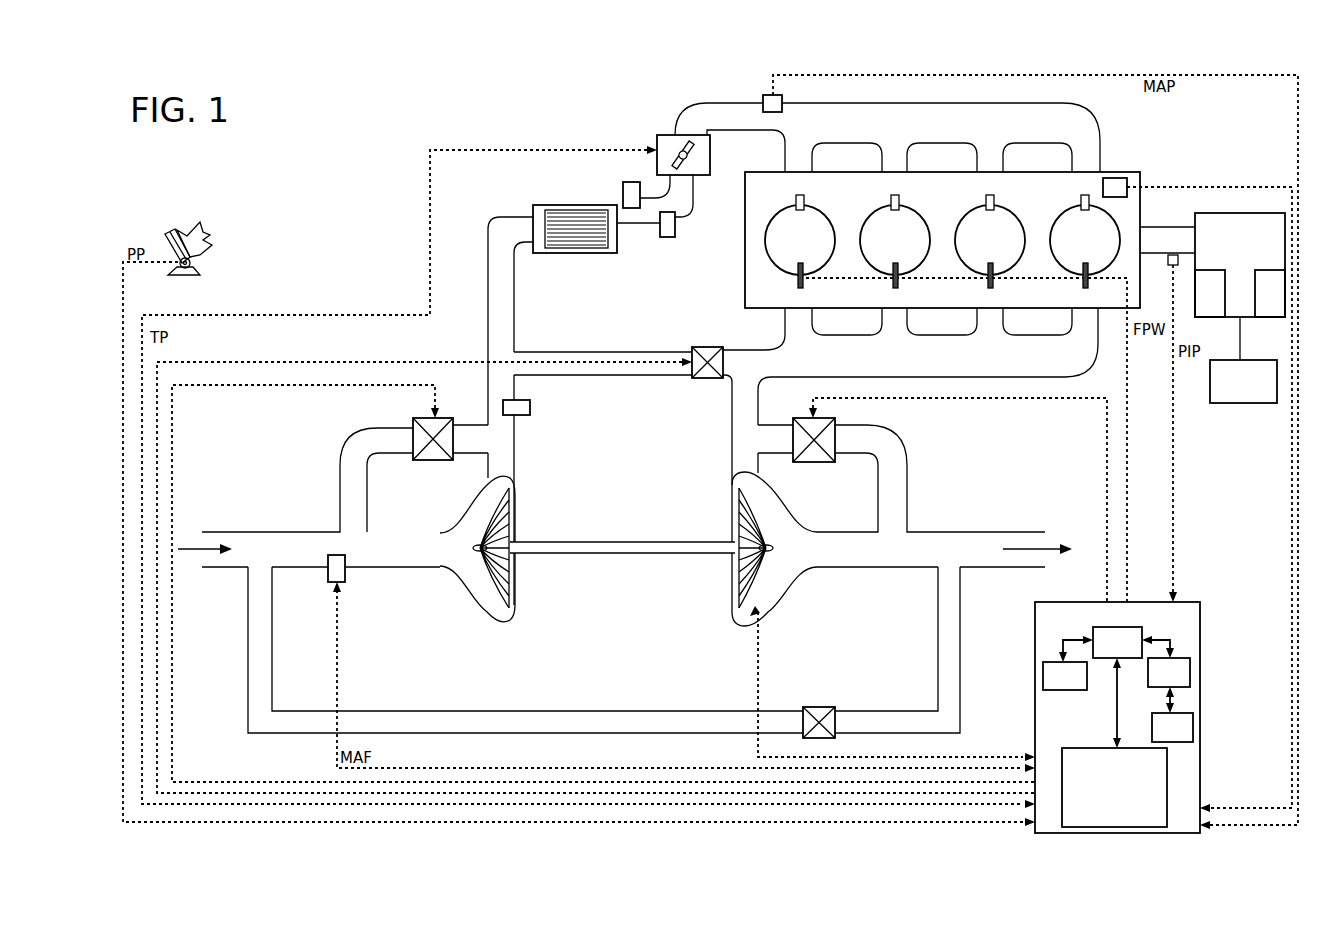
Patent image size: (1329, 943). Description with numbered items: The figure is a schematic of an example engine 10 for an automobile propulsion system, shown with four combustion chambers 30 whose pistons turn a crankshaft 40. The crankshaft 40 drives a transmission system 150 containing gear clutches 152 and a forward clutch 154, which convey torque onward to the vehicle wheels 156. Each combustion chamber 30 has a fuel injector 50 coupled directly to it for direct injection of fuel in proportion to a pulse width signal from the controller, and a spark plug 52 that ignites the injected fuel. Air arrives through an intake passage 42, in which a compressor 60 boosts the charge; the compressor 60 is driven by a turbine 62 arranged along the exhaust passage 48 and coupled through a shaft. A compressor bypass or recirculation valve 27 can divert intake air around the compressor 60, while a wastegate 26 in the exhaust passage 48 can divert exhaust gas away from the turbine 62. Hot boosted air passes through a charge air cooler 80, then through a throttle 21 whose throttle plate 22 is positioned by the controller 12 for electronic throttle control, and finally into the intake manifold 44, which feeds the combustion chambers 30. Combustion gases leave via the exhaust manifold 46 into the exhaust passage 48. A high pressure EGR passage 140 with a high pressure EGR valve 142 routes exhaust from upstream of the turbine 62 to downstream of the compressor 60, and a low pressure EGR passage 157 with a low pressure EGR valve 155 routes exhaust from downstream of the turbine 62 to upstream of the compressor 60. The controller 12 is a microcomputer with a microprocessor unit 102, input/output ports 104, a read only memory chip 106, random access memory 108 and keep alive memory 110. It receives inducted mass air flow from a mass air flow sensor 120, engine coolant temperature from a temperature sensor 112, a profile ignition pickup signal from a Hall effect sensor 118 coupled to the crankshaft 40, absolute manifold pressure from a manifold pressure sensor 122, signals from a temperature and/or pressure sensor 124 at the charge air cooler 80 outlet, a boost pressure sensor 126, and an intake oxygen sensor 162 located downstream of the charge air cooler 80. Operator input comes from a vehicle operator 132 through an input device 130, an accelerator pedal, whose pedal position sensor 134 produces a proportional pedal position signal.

The engine 10 is at (956, 223).
The controller 12 is at (1106, 717).
The throttle 21 is at (673, 138).
The throttle plate 22 is at (700, 166).
The wastegate 26 is at (835, 426).
The compressor bypass or recirculation valve 27 is at (413, 428).
The combustion chamber 30 is at (809, 248).
The crankshaft 40 is at (1162, 227).
The intake passage 42 is at (256, 556).
The intake manifold 44 is at (829, 130).
The exhaust manifold 46 is at (951, 366).
The exhaust passage 48 is at (753, 408).
The fuel injector 50 is at (797, 285).
The spark plug 52 is at (805, 200).
The compressor 60 is at (468, 600).
The turbine 62 is at (770, 503).
The charge air cooler 80 is at (585, 205).
The microprocessor unit 102 is at (1090, 634).
The input/output ports 104 is at (1154, 820).
The read only memory chip 106 is at (1043, 683).
The random access memory 108 is at (1190, 664).
The keep alive memory 110 is at (1193, 716).
The temperature sensor 112 is at (1118, 178).
The Hall effect sensor 118 is at (1170, 266).
The MAF sensor 120 is at (345, 572).
The MAP sensor 122 is at (782, 100).
The temperature and/or pressure sensor 124 is at (667, 237).
The boost pressure sensor 126 is at (530, 410).
The input device 130 is at (186, 239).
The vehicle operator 132 is at (207, 233).
The pedal position sensor 134 is at (190, 263).
The high pressure EGR passage 140 is at (605, 352).
The high pressure EGR valve 142 is at (718, 347).
The transmission system 150 is at (1240, 265).
The gear clutches 152 is at (1223, 308).
The forward clutch 154 is at (1283, 308).
The low pressure EGR valve 155 is at (820, 707).
The vehicle wheels 156 is at (1256, 393).
The low pressure EGR passage 157 is at (540, 711).
The intake oxygen sensor 162 is at (630, 182).